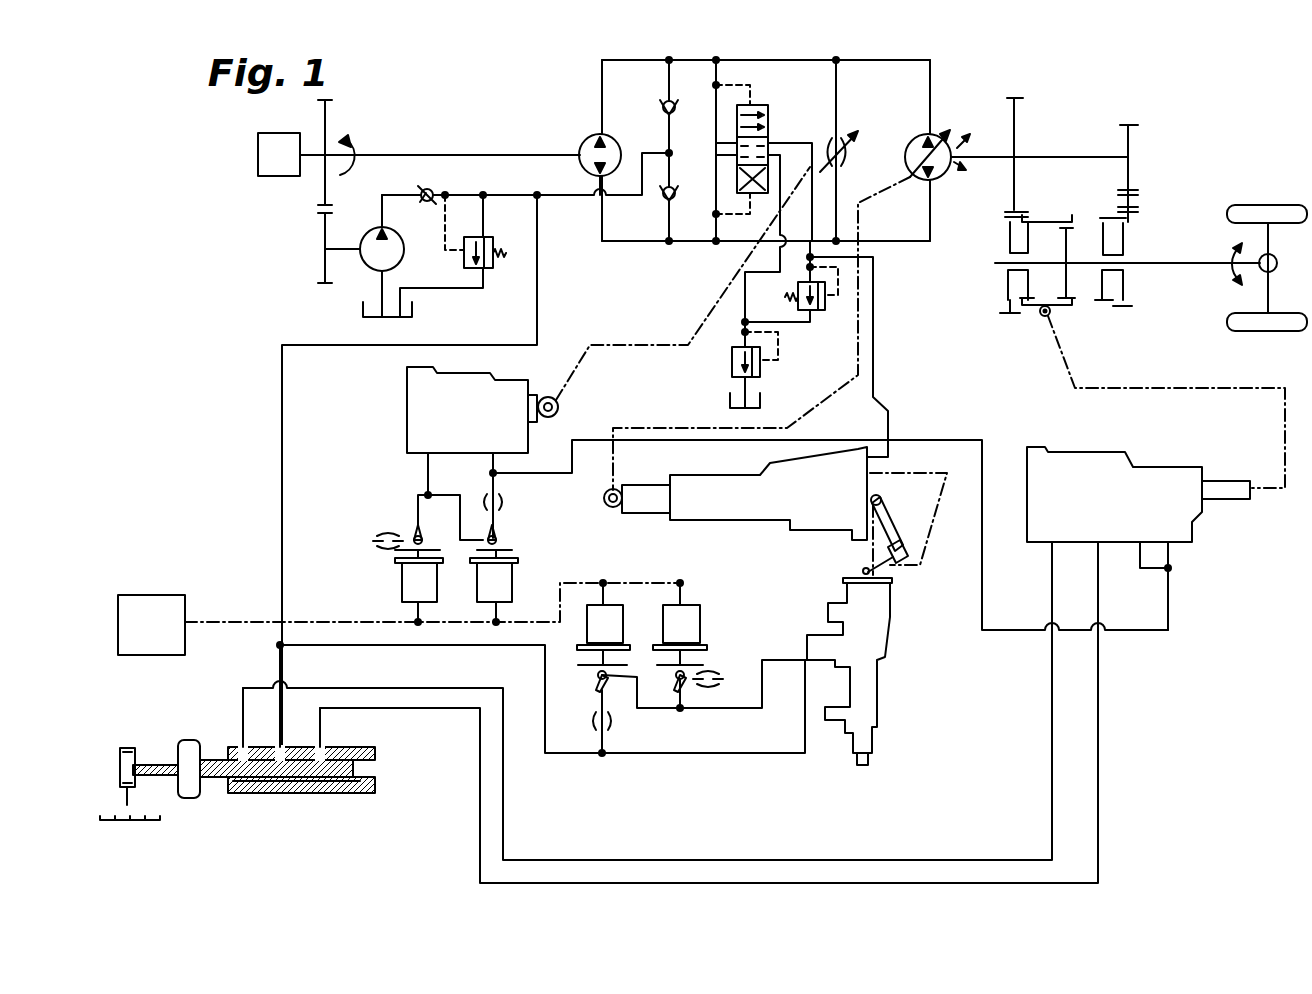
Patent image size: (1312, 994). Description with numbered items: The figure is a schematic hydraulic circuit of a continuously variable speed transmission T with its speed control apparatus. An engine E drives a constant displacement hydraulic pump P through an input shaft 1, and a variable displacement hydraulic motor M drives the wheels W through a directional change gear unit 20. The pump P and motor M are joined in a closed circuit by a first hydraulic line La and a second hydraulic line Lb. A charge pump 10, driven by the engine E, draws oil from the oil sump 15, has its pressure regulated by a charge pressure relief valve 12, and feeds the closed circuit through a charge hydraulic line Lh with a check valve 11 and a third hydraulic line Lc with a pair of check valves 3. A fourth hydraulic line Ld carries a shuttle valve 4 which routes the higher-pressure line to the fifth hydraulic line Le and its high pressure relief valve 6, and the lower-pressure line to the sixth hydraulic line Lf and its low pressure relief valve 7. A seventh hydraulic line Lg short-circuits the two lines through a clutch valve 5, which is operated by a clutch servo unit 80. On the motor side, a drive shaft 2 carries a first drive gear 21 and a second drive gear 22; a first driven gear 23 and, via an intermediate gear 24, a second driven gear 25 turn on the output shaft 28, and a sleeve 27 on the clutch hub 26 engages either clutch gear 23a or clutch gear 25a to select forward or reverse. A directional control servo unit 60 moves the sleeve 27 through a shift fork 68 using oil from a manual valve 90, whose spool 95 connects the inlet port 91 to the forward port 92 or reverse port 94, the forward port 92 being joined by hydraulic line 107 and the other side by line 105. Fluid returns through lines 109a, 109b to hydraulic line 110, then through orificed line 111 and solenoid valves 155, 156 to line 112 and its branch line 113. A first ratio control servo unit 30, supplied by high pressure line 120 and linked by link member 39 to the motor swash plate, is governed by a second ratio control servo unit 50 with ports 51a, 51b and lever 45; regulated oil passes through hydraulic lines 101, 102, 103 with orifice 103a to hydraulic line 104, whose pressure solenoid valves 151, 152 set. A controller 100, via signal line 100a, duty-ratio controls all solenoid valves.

The input shaft 1 is at (497, 155).
The drive shaft 2 is at (986, 158).
The check valves 3 is at (661, 105).
The shuttle valve 4 is at (770, 120).
The clutch valve 5 is at (852, 152).
The high pressure relief valve 6 is at (826, 305).
The low pressure relief valve 7 is at (762, 365).
The charge pump 10 is at (403, 257).
The check valve 11 is at (424, 200).
The charge pressure relief valve 12 is at (491, 238).
The oil sump 15 is at (412, 312).
The directional change gear unit 20 is at (1111, 201).
The first drive gear 21 is at (1018, 133).
The second drive gear 22 is at (1135, 141).
The first driven gear 23 is at (1006, 223).
The clutch gear 23a is at (1038, 218).
The intermediate gear 24 is at (1136, 197).
The second driven gear 25 is at (1125, 290).
The clutch gear 25a is at (1125, 219).
The clutch hub 26 is at (1072, 226).
The sleeve 27 is at (1072, 307).
The output shaft 28 is at (1196, 263).
The first ratio control servo unit 30 is at (747, 532).
The link member 39 is at (878, 320).
The lever 45 is at (903, 525).
The second ratio control servo unit 50 is at (828, 663).
The port of shift valve 51a is at (826, 618).
The port of shift valve 51b is at (838, 668).
The directional control servo unit 60 is at (1142, 522).
The shift fork 68 is at (1249, 386).
The clutch servo unit 80 is at (398, 405).
The manual valve 90 is at (237, 757).
The inlet port 91 is at (274, 747).
The forward port 92 is at (318, 747).
The reverse port 94 is at (240, 747).
The spool 95 is at (310, 792).
The controller 100 is at (168, 595).
The control signal line 100a is at (333, 621).
The hydraulic line 101 is at (538, 294).
The hydraulic line 102 is at (457, 646).
The hydraulic line 103 is at (600, 742).
The orifice 103a is at (611, 720).
The hydraulic line 104 is at (740, 709).
The hydraulic line 105 is at (503, 824).
The hydraulic line 107 is at (1100, 760).
The line 109a is at (1172, 554).
The line 109b is at (1140, 565).
The hydraulic line 110 is at (498, 470).
The line 111 is at (503, 505).
The line 112 is at (426, 466).
The hydraulic line 113 is at (416, 510).
The high pressure line 120 is at (876, 355).
The solenoid valve 151 is at (624, 620).
The solenoid valve 152 is at (705, 620).
The solenoid valve 155 is at (401, 580).
The solenoid valve 156 is at (513, 580).
The engine E is at (258, 157).
The hydraulic pump P is at (588, 142).
The hydraulic motor M is at (938, 136).
The continuously variable speed transmission T is at (907, 52).
The wheels W is at (1278, 196).
The first hydraulic line La is at (634, 241).
The second hydraulic line Lb is at (665, 59).
The third hydraulic line Lc is at (672, 142).
The fourth hydraulic line Ld is at (722, 72).
The fifth hydraulic line Le is at (788, 144).
The sixth hydraulic line Lf is at (757, 290).
The seventh hydraulic line Lg is at (840, 96).
The charge hydraulic line Lh is at (573, 198).